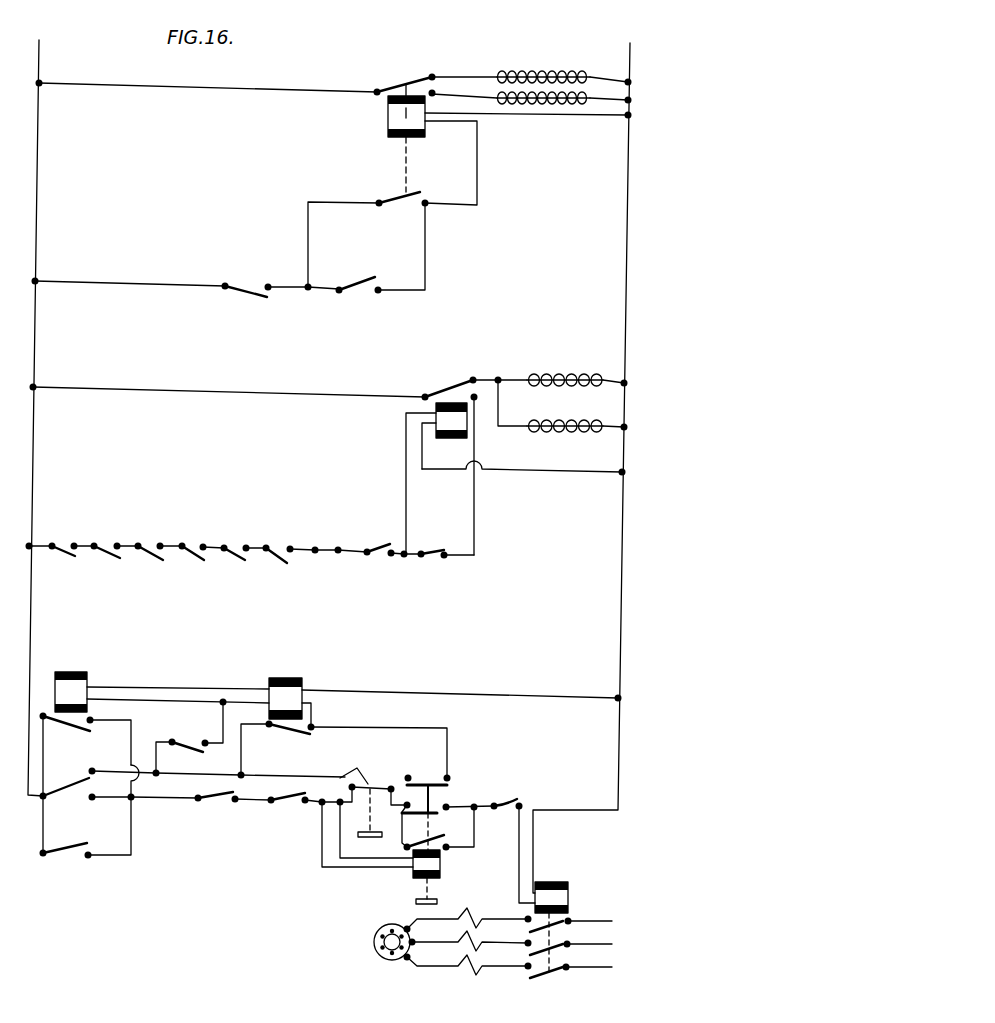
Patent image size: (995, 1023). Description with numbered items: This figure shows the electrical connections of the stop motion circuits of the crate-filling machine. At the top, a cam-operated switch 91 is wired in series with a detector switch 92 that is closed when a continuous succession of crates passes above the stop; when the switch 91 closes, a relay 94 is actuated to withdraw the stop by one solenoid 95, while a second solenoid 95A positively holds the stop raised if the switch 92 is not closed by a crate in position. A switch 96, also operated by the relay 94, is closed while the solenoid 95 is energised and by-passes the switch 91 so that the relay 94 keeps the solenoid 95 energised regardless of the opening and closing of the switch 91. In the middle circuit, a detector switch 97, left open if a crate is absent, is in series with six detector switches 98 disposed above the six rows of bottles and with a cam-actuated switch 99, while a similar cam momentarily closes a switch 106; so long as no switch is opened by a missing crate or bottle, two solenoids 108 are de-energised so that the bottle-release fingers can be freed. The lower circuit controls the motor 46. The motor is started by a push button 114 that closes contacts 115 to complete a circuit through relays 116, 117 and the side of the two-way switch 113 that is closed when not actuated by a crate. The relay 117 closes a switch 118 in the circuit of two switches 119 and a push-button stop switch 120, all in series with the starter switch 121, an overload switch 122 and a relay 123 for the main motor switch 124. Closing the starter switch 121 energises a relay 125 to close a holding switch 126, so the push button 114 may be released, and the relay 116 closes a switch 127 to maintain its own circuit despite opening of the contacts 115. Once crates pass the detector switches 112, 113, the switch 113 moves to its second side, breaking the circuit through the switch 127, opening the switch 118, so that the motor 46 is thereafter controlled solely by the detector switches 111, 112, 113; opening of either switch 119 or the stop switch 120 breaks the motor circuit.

The motor 46 is at (386, 960).
The switch 91 is at (357, 276).
The detector switch 92 is at (245, 298).
The relay 94 is at (398, 118).
The solenoid 95 is at (534, 104).
The second solenoid 95A is at (515, 73).
The switch 96 is at (392, 195).
The detector switch 97 is at (453, 418).
The detector switches 98 is at (287, 563).
The switch 99 is at (429, 552).
The switch 106 is at (380, 548).
The solenoids 108 is at (538, 378).
The detector switch 111 is at (184, 745).
The detector switch 112 is at (80, 846).
The two-way switch 113 is at (60, 784).
The push button 114 is at (416, 901).
The contacts 115 is at (445, 776).
The relay 116 is at (291, 694).
The relay 117 is at (76, 690).
The switch 118 is at (62, 724).
The switches 119 is at (222, 800).
The push-button stop switch 120 is at (347, 773).
The starter switch 121 is at (433, 812).
The overload switch 122 is at (511, 806).
The relay 123 is at (558, 894).
The main motor switch 124 is at (553, 976).
The relay 125 is at (440, 866).
The holding switch 126 is at (438, 841).
The switch 127 is at (284, 735).